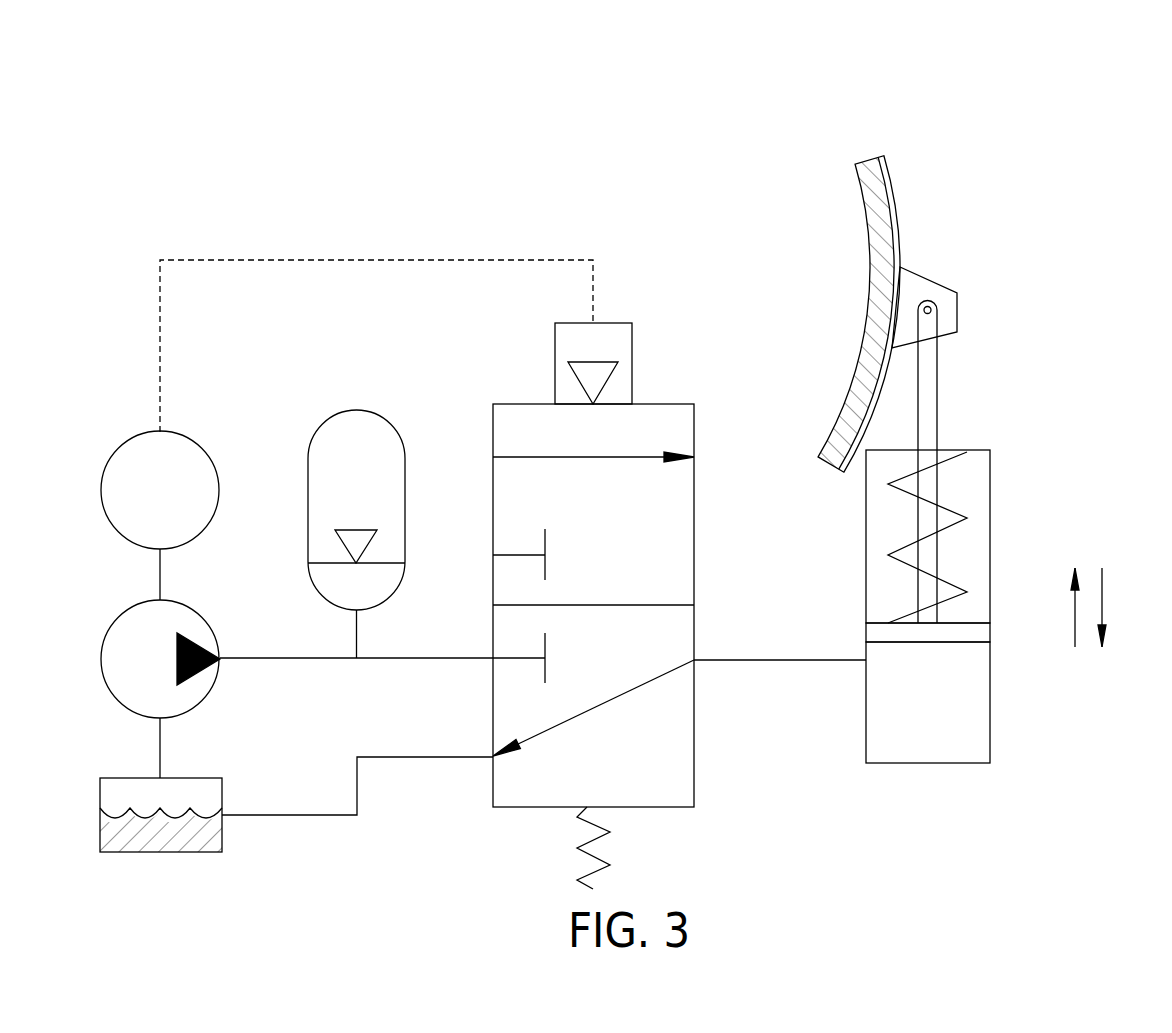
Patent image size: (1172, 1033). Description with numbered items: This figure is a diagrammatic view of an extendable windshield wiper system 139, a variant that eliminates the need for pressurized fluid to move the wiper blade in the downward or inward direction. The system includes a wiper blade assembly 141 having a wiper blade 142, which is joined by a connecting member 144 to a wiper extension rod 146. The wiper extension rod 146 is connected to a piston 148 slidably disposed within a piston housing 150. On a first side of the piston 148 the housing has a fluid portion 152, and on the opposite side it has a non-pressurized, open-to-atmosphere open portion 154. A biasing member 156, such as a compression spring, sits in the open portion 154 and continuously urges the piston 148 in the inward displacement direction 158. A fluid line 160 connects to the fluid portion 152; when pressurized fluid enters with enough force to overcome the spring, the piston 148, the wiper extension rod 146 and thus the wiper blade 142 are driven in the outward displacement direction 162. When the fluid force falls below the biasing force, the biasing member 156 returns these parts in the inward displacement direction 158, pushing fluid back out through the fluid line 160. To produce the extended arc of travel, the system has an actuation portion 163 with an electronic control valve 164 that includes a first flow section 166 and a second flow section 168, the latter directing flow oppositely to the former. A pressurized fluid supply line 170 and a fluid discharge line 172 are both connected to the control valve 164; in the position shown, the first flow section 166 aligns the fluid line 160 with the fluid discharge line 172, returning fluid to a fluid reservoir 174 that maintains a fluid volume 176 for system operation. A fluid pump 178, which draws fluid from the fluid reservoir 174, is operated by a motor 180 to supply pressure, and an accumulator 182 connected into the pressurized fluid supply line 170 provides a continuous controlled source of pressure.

The extendable windshield wiper system 139 is at (790, 79).
The wiper blade assembly 141 is at (944, 229).
The wiper blade 142 is at (873, 201).
The connecting member 144 is at (933, 295).
The wiper extension rod 146 is at (928, 394).
The piston 148 is at (990, 632).
The piston housing 150 is at (990, 568).
The fluid portion 152 is at (978, 697).
The open portion 154 is at (978, 548).
The biasing member 156 is at (978, 514).
The inward displacement direction 158 is at (1104, 600).
The fluid line 160 is at (780, 662).
The outward displacement direction 162 is at (1072, 618).
The actuation portion 163 is at (663, 338).
The electronic control valve 164 is at (680, 423).
The first flow section 166 is at (615, 727).
The second flow section 168 is at (615, 481).
The pressurized fluid supply line 170 is at (412, 655).
The fluid discharge line 172 is at (430, 757).
The fluid reservoir 174 is at (222, 778).
The fluid volume 176 is at (205, 852).
The fluid pump 178 is at (195, 620).
The motor 180 is at (196, 458).
The accumulator 182 is at (372, 430).